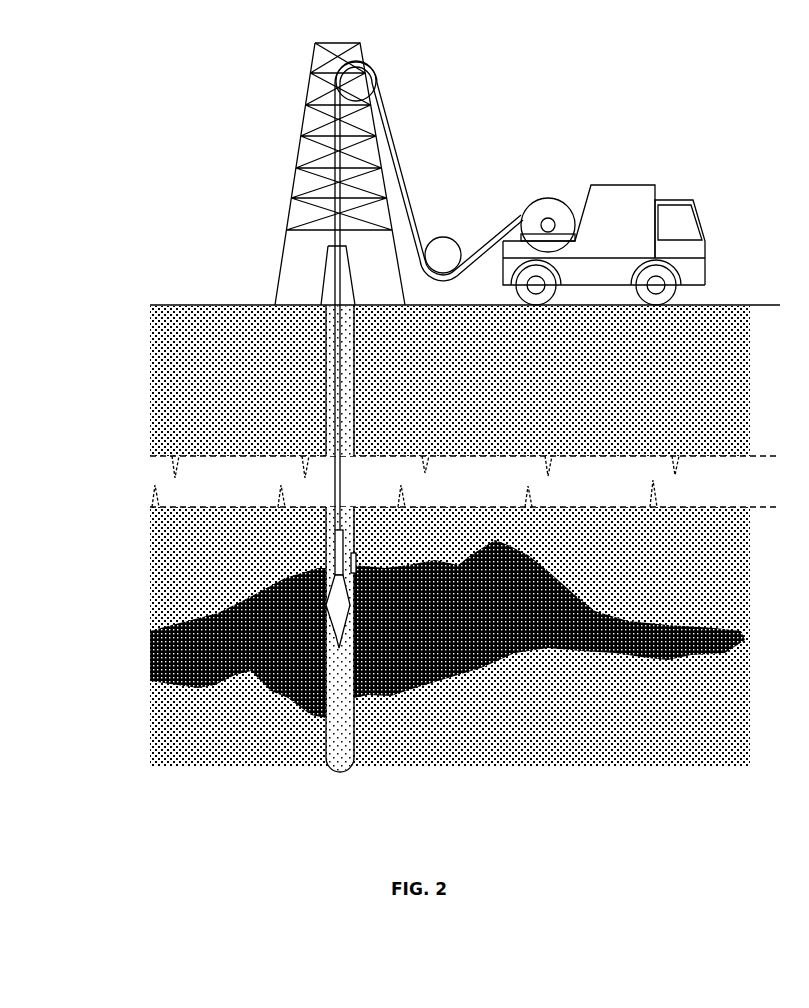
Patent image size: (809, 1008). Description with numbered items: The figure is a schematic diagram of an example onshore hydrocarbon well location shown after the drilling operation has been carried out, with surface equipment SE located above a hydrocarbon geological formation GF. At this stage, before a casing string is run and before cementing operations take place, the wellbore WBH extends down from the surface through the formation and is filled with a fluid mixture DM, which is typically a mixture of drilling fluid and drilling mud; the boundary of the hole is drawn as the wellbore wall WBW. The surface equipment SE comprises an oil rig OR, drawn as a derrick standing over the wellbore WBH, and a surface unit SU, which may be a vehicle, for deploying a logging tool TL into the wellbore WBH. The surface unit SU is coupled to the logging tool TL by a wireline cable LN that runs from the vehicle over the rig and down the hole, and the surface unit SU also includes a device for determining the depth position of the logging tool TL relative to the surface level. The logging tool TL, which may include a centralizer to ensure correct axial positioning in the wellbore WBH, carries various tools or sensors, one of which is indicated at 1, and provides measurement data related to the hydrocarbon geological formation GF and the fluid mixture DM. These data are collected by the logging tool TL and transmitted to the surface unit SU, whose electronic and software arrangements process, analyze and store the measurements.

The oil rig OR is at (297, 117).
The surface equipment SE is at (442, 122).
The surface unit SU is at (582, 175).
The wireline cable LN is at (327, 310).
The wellbore WBH is at (318, 355).
The wellbore wall WBW is at (343, 423).
The logging tool TL is at (327, 542).
The device 1 is at (349, 552).
The hydrocarbon geological formation GF is at (205, 635).
The fluid mixture DM is at (330, 732).